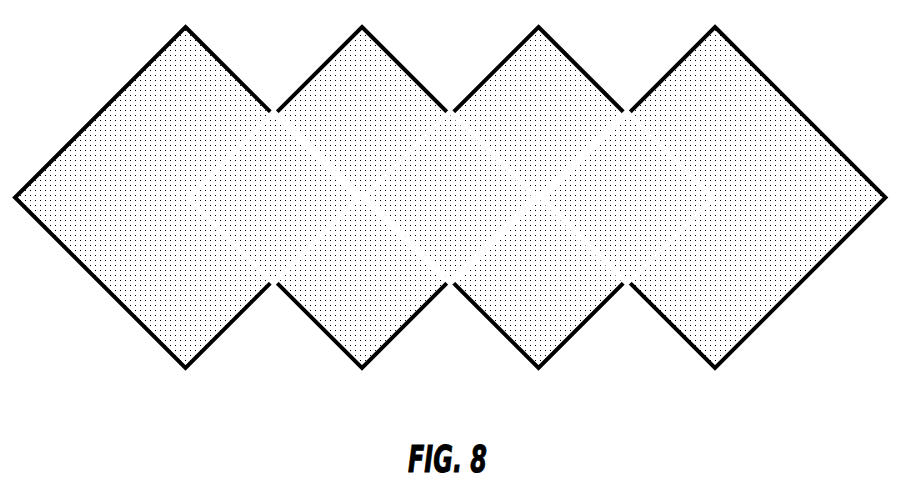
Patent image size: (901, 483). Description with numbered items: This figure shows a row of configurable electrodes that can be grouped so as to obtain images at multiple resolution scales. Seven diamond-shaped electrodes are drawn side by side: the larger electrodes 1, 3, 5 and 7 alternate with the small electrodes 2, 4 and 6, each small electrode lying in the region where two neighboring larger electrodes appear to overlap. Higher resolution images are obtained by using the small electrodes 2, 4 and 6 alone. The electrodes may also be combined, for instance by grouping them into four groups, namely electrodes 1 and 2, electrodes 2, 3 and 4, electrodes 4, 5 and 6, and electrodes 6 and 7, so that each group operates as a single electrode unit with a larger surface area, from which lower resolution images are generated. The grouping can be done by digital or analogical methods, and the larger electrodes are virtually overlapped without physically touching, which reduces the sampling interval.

The electrode 1 is at (185, 197).
The small electrode 2 is at (274, 197).
The electrode 3 is at (362, 197).
The small electrode 4 is at (450, 197).
The electrode 5 is at (538, 197).
The small electrode 6 is at (627, 197).
The electrode 7 is at (715, 197).